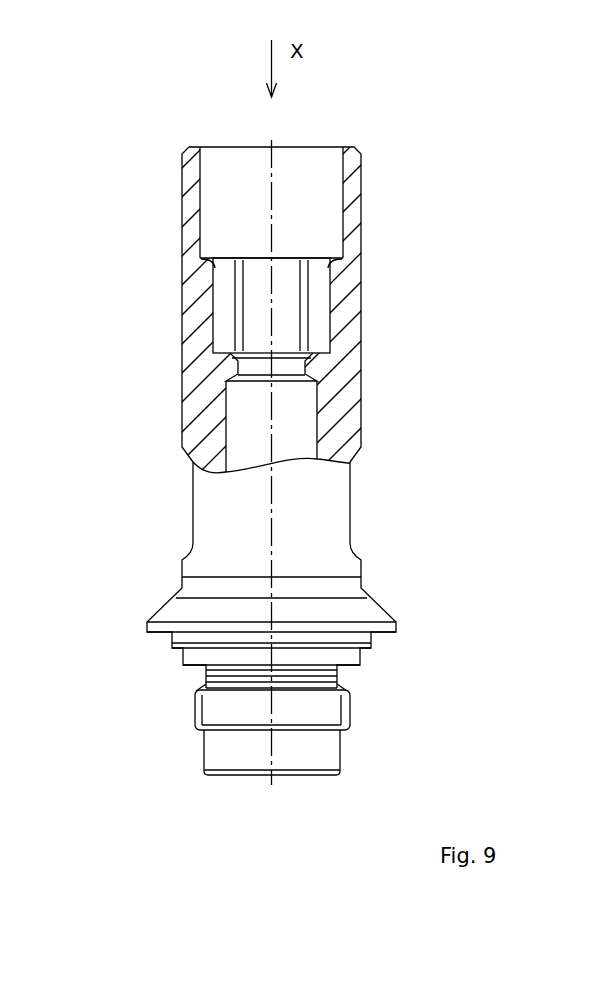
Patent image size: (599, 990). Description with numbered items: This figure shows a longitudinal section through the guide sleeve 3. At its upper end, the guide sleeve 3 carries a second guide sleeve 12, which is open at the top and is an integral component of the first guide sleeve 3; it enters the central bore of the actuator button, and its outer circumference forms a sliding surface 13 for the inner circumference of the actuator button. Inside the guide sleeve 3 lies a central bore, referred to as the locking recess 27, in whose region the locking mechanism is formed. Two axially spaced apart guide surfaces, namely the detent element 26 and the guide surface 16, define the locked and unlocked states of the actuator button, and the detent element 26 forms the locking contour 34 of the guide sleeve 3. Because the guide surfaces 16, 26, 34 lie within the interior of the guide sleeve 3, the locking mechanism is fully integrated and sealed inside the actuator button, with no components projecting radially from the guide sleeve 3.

The guide sleeve 3 is at (338, 505).
The second guide sleeve 12 is at (188, 147).
The sliding surface 13 is at (182, 177).
The guide surface 16 is at (211, 366).
The detent element 26 is at (200, 207).
The locking contour 34 is at (213, 258).
The locking recess 27 is at (223, 320).